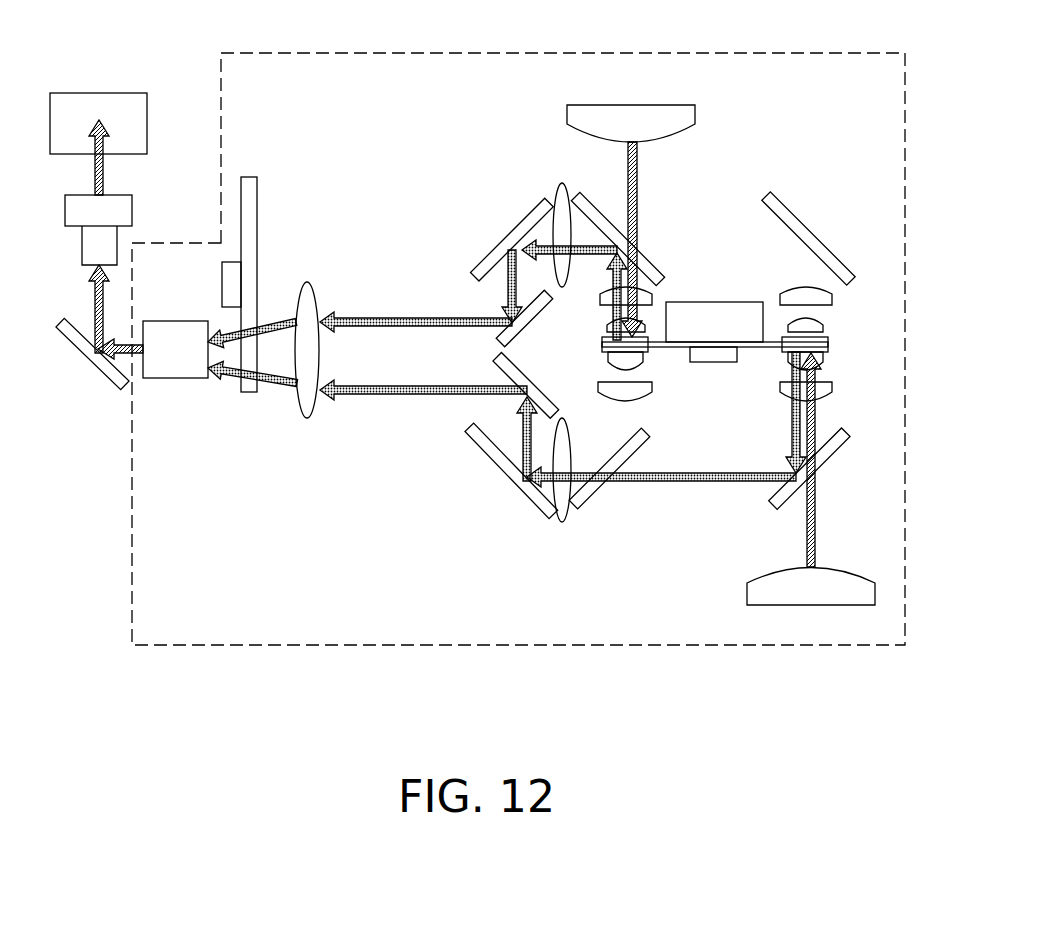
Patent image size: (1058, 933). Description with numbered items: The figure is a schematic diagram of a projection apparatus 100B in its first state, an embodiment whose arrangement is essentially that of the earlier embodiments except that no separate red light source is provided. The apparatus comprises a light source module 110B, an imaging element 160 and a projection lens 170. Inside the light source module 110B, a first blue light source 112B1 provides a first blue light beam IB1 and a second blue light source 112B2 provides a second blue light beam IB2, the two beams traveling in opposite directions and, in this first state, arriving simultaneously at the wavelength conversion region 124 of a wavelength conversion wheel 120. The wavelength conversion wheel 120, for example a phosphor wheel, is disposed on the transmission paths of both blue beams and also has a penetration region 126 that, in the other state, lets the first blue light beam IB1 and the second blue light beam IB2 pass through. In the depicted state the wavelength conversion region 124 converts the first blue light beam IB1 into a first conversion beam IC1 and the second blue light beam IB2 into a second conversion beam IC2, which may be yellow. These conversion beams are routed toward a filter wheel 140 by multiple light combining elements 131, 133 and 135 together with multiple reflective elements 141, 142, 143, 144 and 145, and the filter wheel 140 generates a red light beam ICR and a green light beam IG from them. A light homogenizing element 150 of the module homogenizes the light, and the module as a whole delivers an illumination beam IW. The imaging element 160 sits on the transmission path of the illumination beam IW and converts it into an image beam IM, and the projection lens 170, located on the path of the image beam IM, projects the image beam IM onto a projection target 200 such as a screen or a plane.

The projection apparatus 100B is at (903, 695).
The light source module 110B is at (673, 53).
The first blue light source 112B1 is at (687, 120).
The second blue light source 112B2 is at (753, 593).
The wavelength conversion wheel 120 is at (752, 353).
The wavelength conversion region 124 is at (820, 350).
The penetration region 126 is at (771, 328).
The light combining element 131 is at (645, 262).
The light combining element 133 is at (845, 433).
The light combining element 135 is at (647, 432).
The filter wheel 140 is at (250, 182).
The reflective element 141 is at (805, 232).
The reflective element 142 is at (527, 223).
The reflective element 143 is at (512, 473).
The reflective element 144 is at (535, 313).
The reflective element 145 is at (527, 380).
The light homogenizing element 150 is at (172, 358).
The imaging element 160 is at (92, 355).
The projection lens 170 is at (123, 213).
The projection target 200 is at (130, 105).
The first blue light beam IB1 is at (640, 202).
The second blue light beam IB2 is at (815, 508).
The first conversion beam IC1 is at (507, 292).
The second conversion beam IC2 is at (675, 482).
The red light beam ICR is at (367, 375).
The green light beam IG is at (231, 348).
The illumination beam IW is at (137, 338).
The image beam IM is at (106, 178).
The object under test P is at (713, 344).